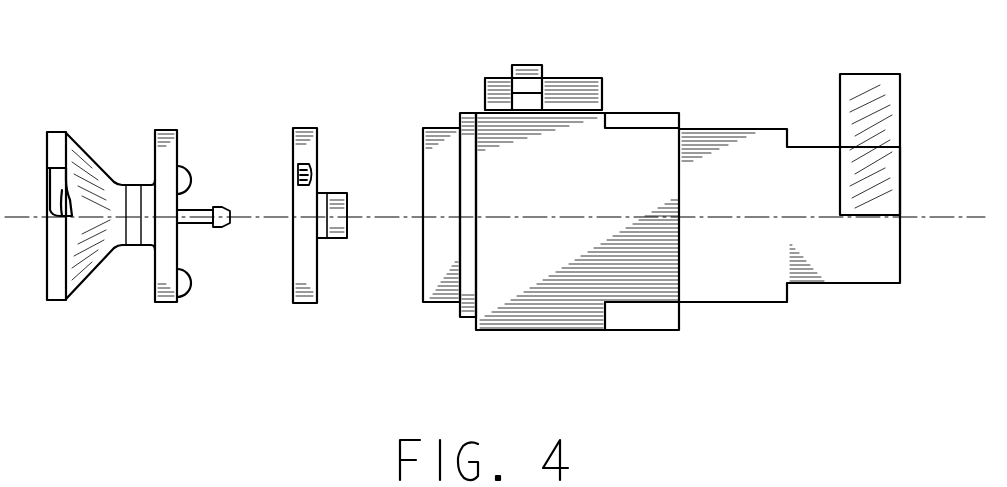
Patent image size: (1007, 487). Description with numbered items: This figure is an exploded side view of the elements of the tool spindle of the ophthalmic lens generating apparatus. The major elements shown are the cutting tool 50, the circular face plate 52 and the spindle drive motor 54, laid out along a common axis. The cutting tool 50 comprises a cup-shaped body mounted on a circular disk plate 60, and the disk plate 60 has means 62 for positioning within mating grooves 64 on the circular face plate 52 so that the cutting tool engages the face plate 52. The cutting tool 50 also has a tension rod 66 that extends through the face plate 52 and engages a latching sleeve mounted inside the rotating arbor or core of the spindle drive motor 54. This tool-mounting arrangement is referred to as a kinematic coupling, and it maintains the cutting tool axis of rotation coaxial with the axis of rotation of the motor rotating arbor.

The cutting tool 50 is at (97, 110).
The circular face plate 52 is at (305, 127).
The spindle drive motor 54 is at (630, 138).
The circular disk plate 60 is at (162, 129).
The means for positioning 62 is at (194, 176).
The mating grooves 64 is at (292, 176).
The tension rod 66 is at (196, 226).